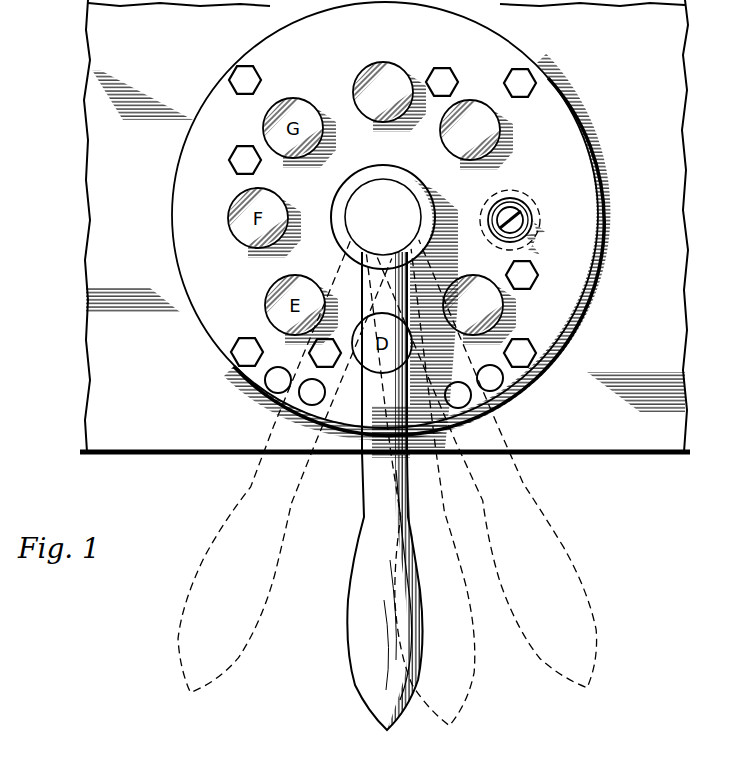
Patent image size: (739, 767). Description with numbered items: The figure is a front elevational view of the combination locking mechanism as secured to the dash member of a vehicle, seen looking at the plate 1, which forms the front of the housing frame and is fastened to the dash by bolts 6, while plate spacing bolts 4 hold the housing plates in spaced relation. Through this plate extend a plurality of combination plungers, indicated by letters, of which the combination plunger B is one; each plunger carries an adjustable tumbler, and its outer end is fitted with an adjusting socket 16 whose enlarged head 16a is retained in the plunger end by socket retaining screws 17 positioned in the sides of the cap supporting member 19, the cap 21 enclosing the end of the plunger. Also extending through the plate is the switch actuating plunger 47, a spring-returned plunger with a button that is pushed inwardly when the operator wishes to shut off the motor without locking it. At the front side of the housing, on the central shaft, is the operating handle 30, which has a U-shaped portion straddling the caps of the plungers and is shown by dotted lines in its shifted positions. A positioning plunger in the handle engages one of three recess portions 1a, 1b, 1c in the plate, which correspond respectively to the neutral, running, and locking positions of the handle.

The plate 1 is at (563, 128).
The recess portion 1a is at (355, 456).
The recess portion 1b is at (275, 392).
The recess portion 1c is at (504, 382).
The plate spacing bolts 4 is at (234, 162).
The bolts 6 is at (241, 68).
The adjusting sockets 16 is at (494, 236).
The enlarged heads 16a is at (497, 198).
The socket retaining screws 17 is at (498, 226).
The cap supporting members 19 is at (523, 205).
The caps 21 is at (500, 148).
The operating handle 30 is at (363, 522).
The switch actuating plunger 47 is at (390, 62).
The combination plunger B is at (506, 217).